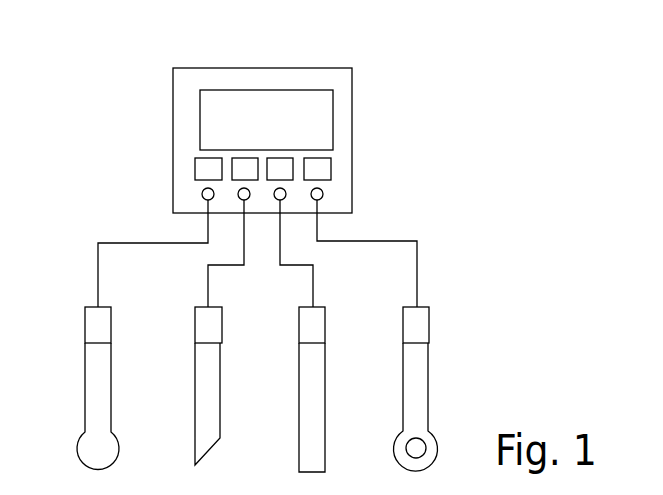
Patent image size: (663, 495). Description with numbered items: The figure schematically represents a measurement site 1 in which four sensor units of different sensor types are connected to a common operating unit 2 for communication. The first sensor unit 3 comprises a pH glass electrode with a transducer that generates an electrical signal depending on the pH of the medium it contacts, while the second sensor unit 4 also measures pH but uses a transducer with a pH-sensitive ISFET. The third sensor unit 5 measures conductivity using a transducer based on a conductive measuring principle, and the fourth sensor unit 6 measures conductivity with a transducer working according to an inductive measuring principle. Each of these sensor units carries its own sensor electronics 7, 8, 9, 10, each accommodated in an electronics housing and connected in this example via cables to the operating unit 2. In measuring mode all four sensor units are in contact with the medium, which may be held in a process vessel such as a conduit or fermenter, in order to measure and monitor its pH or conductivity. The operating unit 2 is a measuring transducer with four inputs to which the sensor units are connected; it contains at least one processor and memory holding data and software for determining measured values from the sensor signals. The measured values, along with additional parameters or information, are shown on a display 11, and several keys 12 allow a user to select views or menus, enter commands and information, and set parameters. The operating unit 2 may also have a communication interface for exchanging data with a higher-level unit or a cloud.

The measurement site 1 is at (466, 84).
The operating unit 2 is at (352, 97).
The first sensor unit 3 is at (86, 399).
The second sensor unit 4 is at (196, 399).
The third sensor unit 5 is at (301, 399).
The fourth sensor unit 6 is at (406, 399).
The sensor electronics 7 is at (88, 327).
The sensor electronics 8 is at (207, 327).
The sensor electronics 9 is at (310, 327).
The sensor electronics 10 is at (413, 327).
The display 11 is at (278, 133).
The keys 12 is at (290, 168).